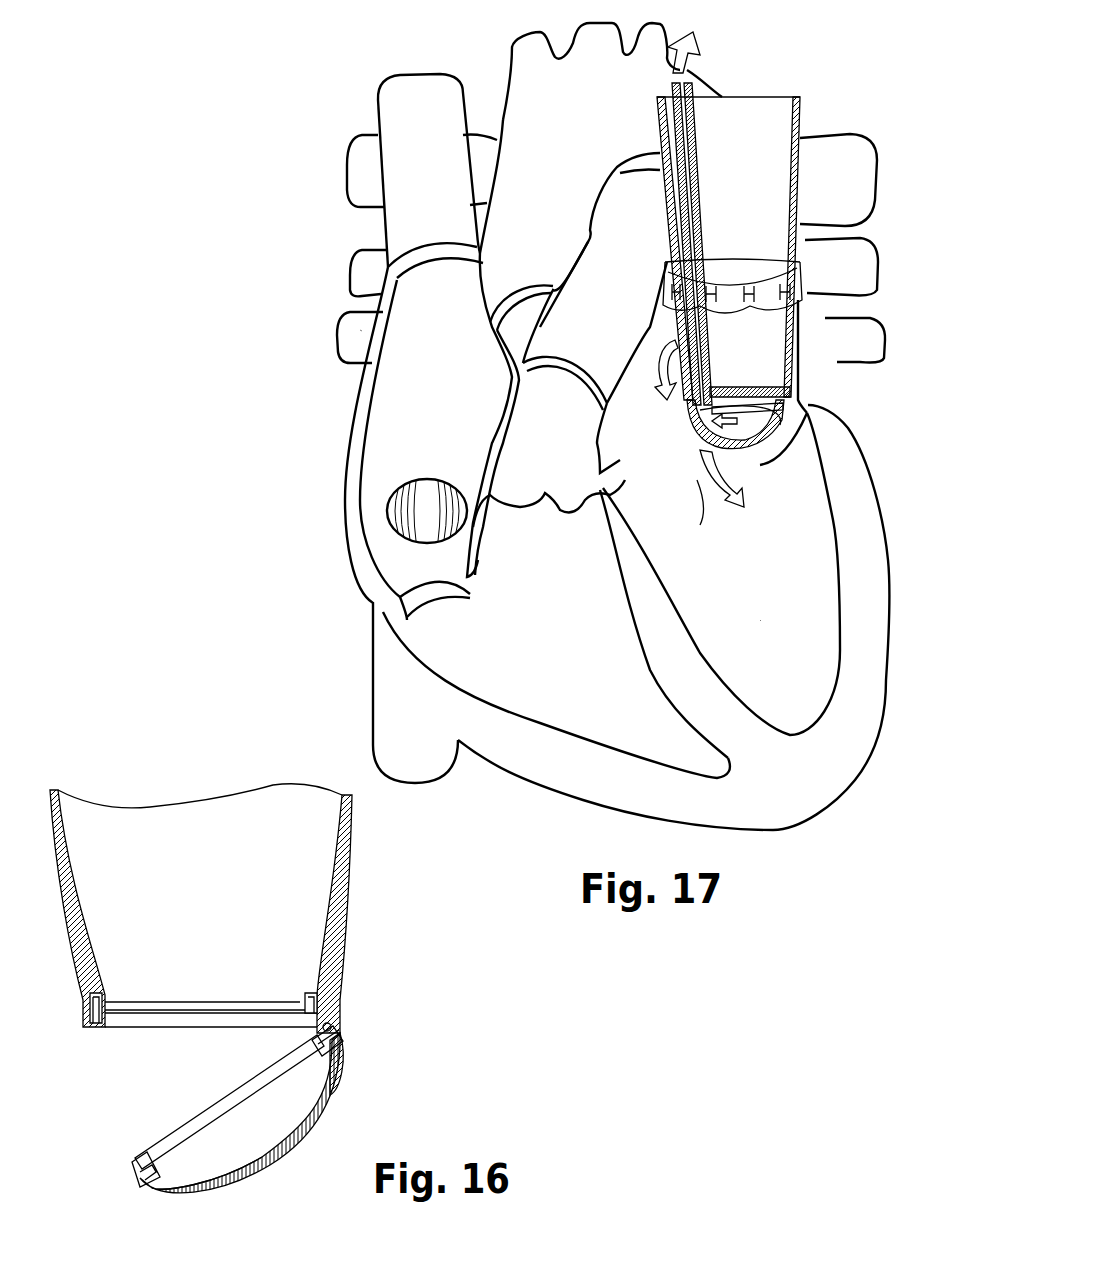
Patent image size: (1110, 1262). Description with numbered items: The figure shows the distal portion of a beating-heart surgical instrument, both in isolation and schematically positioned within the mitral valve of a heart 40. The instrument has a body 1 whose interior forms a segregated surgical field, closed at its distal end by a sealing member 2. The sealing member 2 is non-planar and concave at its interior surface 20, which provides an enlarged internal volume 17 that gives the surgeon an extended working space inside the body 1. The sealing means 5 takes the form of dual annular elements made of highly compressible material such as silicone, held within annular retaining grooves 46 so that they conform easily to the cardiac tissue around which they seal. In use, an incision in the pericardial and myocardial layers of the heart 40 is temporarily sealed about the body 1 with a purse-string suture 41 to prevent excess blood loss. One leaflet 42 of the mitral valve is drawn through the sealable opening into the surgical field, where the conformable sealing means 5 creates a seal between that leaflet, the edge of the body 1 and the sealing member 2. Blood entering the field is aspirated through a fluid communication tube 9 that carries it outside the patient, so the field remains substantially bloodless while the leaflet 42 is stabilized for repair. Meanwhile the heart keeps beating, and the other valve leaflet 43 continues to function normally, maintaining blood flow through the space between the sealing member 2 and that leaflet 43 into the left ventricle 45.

In FIG. 17, the body 1 is at (763, 128).
In FIG. 16, the body 1 is at (320, 958).
In FIG. 17, the sealing member 2 is at (758, 460).
In FIG. 16, the sealing member 2 is at (340, 1078).
In FIG. 17, the sealing means 5 is at (827, 373).
In FIG. 16, the sealing means 5 is at (153, 1147).
In FIG. 17, the fluid communication tube 9 is at (680, 132).
In FIG. 17, the internal volume 17 is at (750, 445).
In FIG. 16, the internal volume 17 is at (213, 1163).
In FIG. 16, the interior surface 20 is at (250, 1180).
In FIG. 17, the heart 40 is at (437, 445).
In FIG. 17, the purse-string suture 41 is at (810, 298).
In FIG. 17, the leaflet 42 is at (817, 410).
In FIG. 17, the valve leaflet 43 is at (697, 480).
In FIG. 17, the left ventricle 45 is at (766, 655).
In FIG. 16, the annular retaining grooves 46 is at (97, 1030).